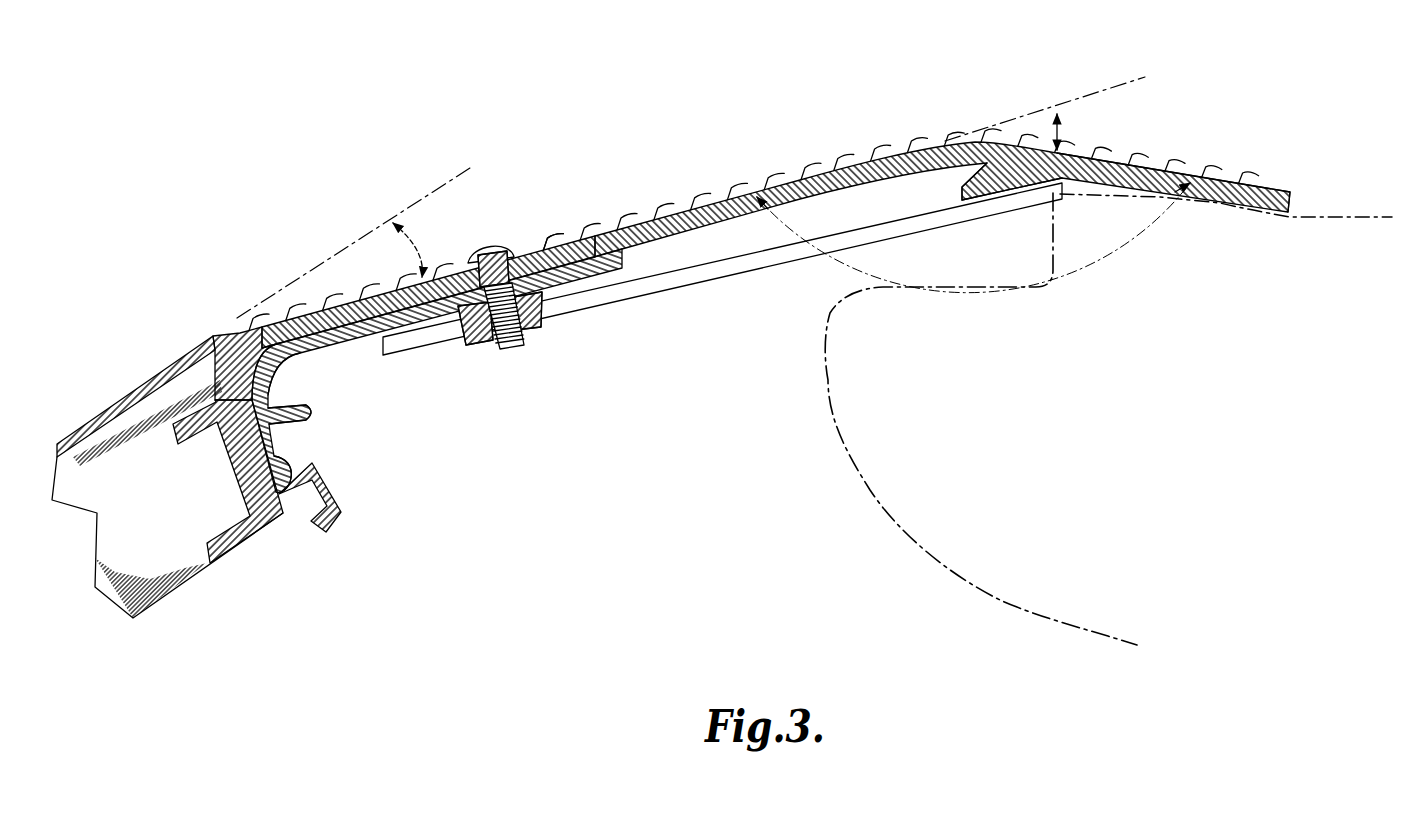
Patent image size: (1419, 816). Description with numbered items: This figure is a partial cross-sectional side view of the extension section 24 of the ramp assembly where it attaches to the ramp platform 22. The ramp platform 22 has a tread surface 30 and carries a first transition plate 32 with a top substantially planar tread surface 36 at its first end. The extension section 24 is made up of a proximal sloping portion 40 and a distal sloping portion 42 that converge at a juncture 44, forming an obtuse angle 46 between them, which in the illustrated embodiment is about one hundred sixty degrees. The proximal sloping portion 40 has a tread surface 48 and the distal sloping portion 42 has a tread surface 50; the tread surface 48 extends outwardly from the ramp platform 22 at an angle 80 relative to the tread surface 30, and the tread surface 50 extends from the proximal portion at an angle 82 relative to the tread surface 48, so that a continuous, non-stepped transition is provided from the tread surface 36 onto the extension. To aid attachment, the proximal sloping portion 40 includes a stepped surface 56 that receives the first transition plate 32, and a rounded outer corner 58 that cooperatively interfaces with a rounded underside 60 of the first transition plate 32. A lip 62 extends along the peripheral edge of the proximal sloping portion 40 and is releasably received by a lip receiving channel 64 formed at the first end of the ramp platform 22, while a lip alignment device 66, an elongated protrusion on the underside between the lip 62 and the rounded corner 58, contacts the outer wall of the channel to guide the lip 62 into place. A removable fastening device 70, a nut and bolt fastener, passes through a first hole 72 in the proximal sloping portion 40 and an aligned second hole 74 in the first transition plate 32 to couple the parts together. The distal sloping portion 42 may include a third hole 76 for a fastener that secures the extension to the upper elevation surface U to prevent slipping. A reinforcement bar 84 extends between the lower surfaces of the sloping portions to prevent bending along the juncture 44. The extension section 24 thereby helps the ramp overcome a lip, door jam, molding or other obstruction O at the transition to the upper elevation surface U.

The ramp platform 22 is at (175, 384).
The extension section 24 is at (769, 263).
The tread surface 30 is at (140, 387).
The first transition plate 32 is at (584, 246).
The tread surface 36 is at (557, 237).
The proximal sloping portion 40 is at (673, 210).
The distal sloping portion 42 is at (1125, 166).
The juncture 44 is at (938, 142).
The obtuse angle 46 is at (974, 293).
The tread surface 48 is at (732, 198).
The tread surface 50 is at (1082, 156).
The stepped surface 56 is at (580, 273).
The rounded outer corner 58 is at (280, 375).
The rounded underside 60 is at (250, 346).
The lip 62 is at (297, 465).
The lip receiving channel 64 is at (286, 517).
The lip alignment device 66 is at (320, 413).
The fastening device 70 is at (490, 245).
The first hole 72 is at (472, 327).
The second hole 74 is at (515, 250).
The third hole 76 is at (1165, 174).
The angle 80 is at (410, 236).
The angle 82 is at (1056, 128).
The reinforcement bar 84 is at (652, 285).
The obstruction O is at (1050, 230).
The upper elevation surface U is at (1345, 210).